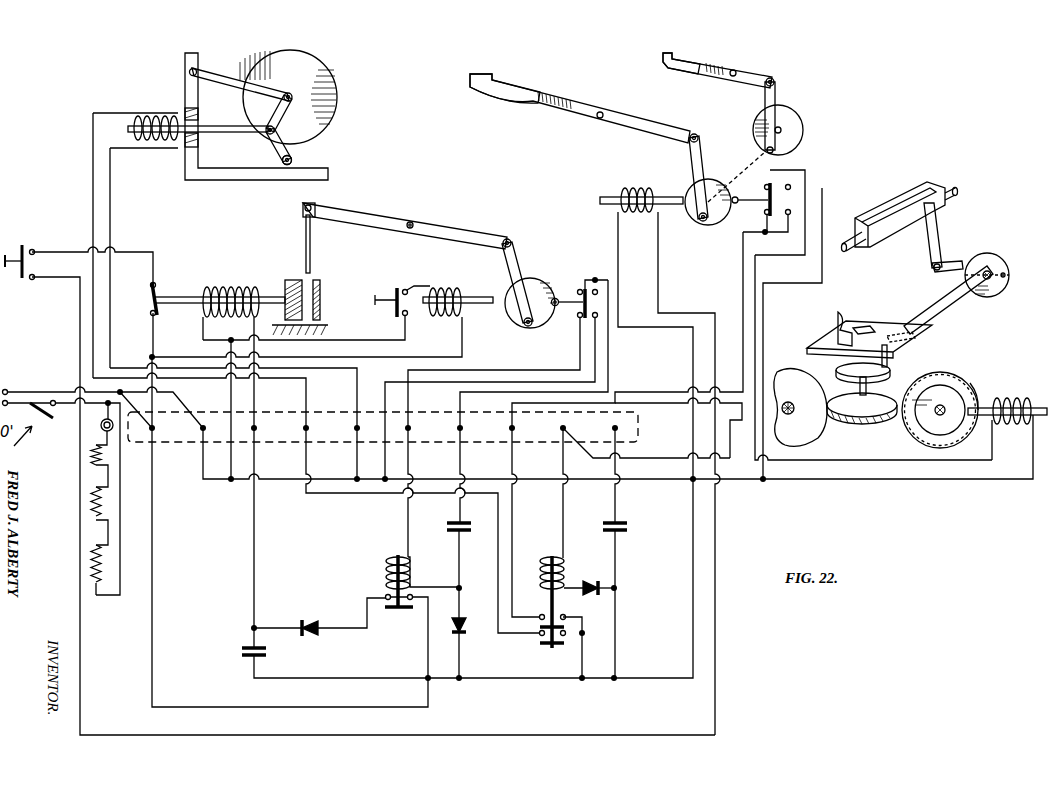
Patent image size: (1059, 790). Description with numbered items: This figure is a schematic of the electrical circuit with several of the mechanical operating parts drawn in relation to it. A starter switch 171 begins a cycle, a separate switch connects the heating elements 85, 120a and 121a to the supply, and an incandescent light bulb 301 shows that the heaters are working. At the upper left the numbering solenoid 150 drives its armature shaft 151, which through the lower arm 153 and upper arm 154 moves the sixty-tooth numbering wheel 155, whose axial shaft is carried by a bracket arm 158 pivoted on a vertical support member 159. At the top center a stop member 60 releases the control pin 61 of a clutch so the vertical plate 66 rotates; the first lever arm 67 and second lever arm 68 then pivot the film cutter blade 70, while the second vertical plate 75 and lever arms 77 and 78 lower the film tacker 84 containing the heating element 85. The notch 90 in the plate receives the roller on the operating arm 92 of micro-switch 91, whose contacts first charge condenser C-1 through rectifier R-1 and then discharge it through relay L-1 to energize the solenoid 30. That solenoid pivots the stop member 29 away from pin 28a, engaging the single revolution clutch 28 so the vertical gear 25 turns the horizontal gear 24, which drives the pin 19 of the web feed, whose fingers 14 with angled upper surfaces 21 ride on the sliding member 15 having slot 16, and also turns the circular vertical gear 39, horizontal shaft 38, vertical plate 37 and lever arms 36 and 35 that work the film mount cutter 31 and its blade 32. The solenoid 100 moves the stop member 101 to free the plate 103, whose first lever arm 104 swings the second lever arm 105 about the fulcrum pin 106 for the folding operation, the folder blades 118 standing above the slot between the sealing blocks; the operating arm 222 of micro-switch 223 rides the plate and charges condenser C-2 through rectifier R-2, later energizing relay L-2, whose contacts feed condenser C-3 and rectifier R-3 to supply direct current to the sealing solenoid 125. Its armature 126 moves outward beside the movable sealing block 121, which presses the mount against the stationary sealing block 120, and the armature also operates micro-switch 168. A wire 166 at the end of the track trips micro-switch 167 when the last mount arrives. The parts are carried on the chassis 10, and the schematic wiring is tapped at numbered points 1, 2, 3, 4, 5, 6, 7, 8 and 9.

The numbering solenoid 150 is at (132, 120).
The armature shaft 151 is at (232, 125).
The lower arm 153 is at (268, 145).
The upper arm 154 is at (293, 122).
The numbering wheel 155 is at (325, 75).
The bracket arm 158 is at (222, 70).
The vertical support member 159 is at (185, 72).
The film cutter blade 70 is at (503, 90).
The second lever arm 68 is at (651, 126).
The first lever arm 67 is at (690, 152).
The vertical plate 66 is at (708, 170).
The control pin 61 is at (680, 192).
The stop member 60 is at (688, 206).
The film tacker 84 is at (688, 52).
The lever arm 78 is at (752, 72).
The lever arm 77 is at (783, 97).
The second vertical plate 75 is at (805, 127).
The operating arm 92 is at (742, 197).
The micro-switch 91 is at (800, 176).
The notch 90 is at (745, 215).
The film mount cutter 31 is at (892, 198).
The blade 32 is at (897, 228).
The first lever arm 35 is at (937, 222).
The second lever arm 36 is at (960, 262).
The vertical plate 37 is at (1000, 268).
The horizontal shaft 38 is at (953, 300).
The fingers 14 is at (838, 318).
The upper surfaces 21 is at (865, 324).
The sliding member 15 is at (888, 326).
The slot 16 is at (912, 337).
The pin 19 is at (890, 364).
The pin 28a is at (975, 400).
The stop member 29 is at (980, 403).
The horizontal gear 24 is at (837, 418).
The single revolution clutch 28 is at (925, 420).
The vertical gear 25 is at (965, 447).
The solenoid 30 is at (1010, 420).
The circular vertical gear 39 is at (793, 445).
The fulcrum pin 106 is at (420, 205).
The second lever arm 105 is at (452, 234).
The first lever arm 104 is at (520, 258).
The blades 118 is at (312, 247).
The movable sealing block 121 is at (301, 278).
The stationary sealing block 120 is at (325, 292).
The micro-switch 167 is at (397, 285).
The wire 166 is at (373, 304).
The solenoid 100 is at (440, 288).
The stop member 101 is at (478, 305).
The plate 103 is at (516, 325).
The micro-switch 223 is at (579, 290).
The operating arm 222 is at (560, 308).
The sealing solenoid 125 is at (255, 278).
The armature 126 is at (175, 297).
The micro-switch 168 is at (152, 300).
The starter switch 171 is at (22, 282).
The incandescent light bulb 301 is at (100, 425).
The heating element 85 is at (90, 457).
The heating element 120a is at (93, 508).
The heating element 121a is at (93, 588).
The contact 1 is at (158, 420).
The contact 2 is at (209, 420).
The contact 3 is at (260, 420).
The contact 4 is at (312, 420).
The contact 5 is at (363, 420).
The contact 6 is at (414, 420).
The contact 7 is at (466, 420).
The contact 8 is at (518, 420).
The contact 9 is at (569, 420).
The chassis 10 is at (625, 420).
The relay L-1 is at (548, 558).
The relay L-2 is at (388, 560).
The condenser C-1 is at (626, 524).
The condenser C-2 is at (452, 521).
The condenser C-3 is at (240, 650).
The rectifier R-1 is at (598, 563).
The rectifier R-2 is at (463, 632).
The rectifier R-3 is at (318, 636).